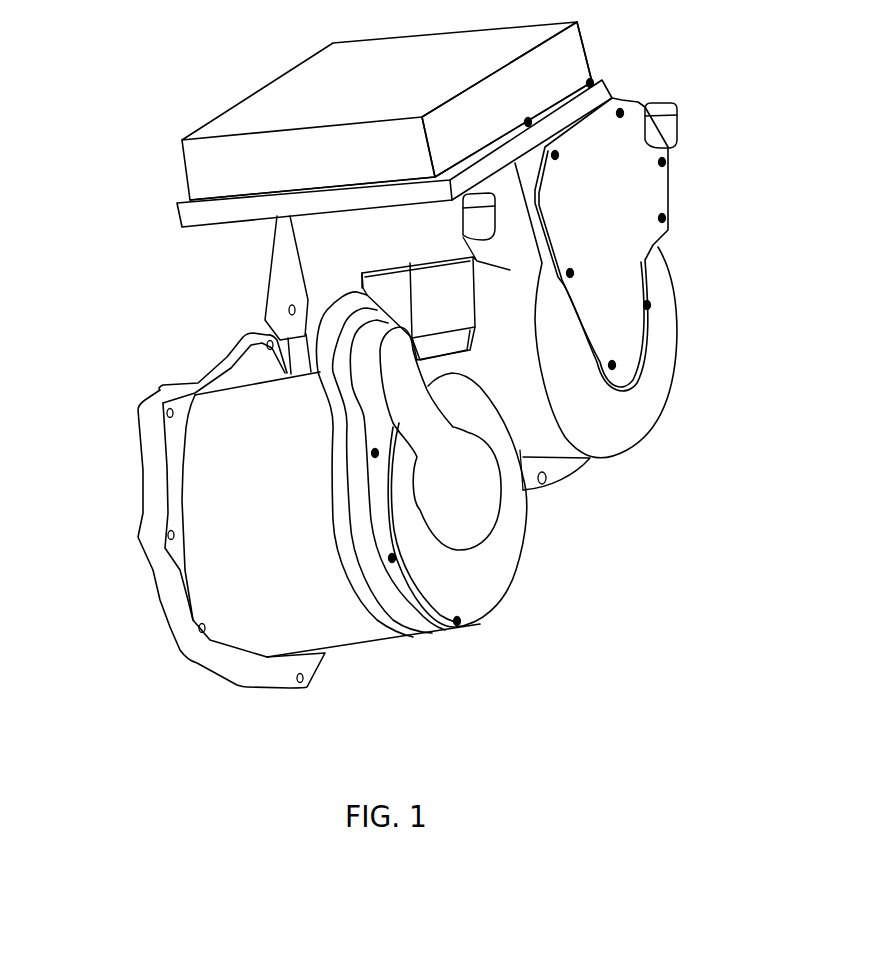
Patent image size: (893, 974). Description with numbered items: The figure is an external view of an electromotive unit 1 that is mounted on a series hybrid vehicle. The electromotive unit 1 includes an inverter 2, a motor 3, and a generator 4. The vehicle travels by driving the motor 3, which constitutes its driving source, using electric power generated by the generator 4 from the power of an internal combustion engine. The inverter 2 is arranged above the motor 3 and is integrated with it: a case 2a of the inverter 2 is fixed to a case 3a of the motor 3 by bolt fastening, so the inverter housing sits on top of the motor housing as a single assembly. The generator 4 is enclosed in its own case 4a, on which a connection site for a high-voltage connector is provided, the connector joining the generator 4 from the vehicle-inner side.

The electromotive unit 1 is at (104, 180).
The inverter 2 is at (266, 76).
The case of the inverter 2a is at (562, 63).
The motor 3 is at (683, 403).
The case of the motor 3a is at (662, 320).
The generator 4 is at (363, 660).
The case of the generator 4a is at (217, 497).